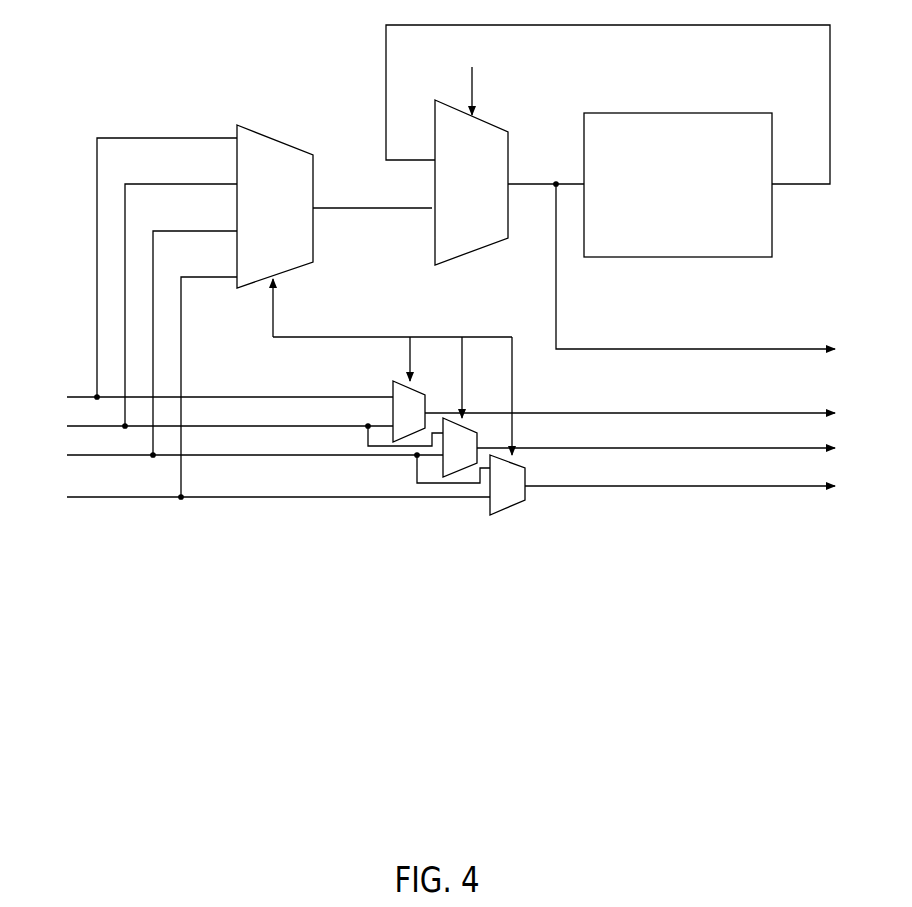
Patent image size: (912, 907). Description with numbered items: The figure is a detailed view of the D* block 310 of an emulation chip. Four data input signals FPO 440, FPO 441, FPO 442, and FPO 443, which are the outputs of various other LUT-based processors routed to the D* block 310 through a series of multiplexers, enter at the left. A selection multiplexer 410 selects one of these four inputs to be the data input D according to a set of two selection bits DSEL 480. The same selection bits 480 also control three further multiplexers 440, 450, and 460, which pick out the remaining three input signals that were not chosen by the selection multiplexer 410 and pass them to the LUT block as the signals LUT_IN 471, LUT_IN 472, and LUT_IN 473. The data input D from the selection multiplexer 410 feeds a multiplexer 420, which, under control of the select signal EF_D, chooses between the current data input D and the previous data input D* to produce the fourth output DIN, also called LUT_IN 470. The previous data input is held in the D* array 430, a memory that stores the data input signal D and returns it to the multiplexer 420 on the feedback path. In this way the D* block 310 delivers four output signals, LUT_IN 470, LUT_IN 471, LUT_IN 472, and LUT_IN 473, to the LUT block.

The D* block 310 is at (83, 33).
The selection multiplexer 410 is at (334, 206).
The multiplexer 420 is at (608, 145).
The D* array 430 is at (678, 185).
The FPO 440 data input signal / multiplexer 440 is at (225, 290).
The FPO 441 data input signal 441 is at (234, 315).
The FPO 442 data input signal 442 is at (257, 357).
The FPO 443 data input signal 443 is at (257, 388).
The multiplexer 450 is at (460, 447).
The multiplexer 460 is at (507, 485).
The LUT_IN 470 output signal (DIN) 470 is at (694, 265).
The LUT_IN 471 output signal 471 is at (630, 400).
The LUT_IN 472 output signal 472 is at (656, 436).
The LUT_IN 473 output signal 473 is at (680, 473).
The selection bits DSEL[1:0] 480 is at (392, 367).